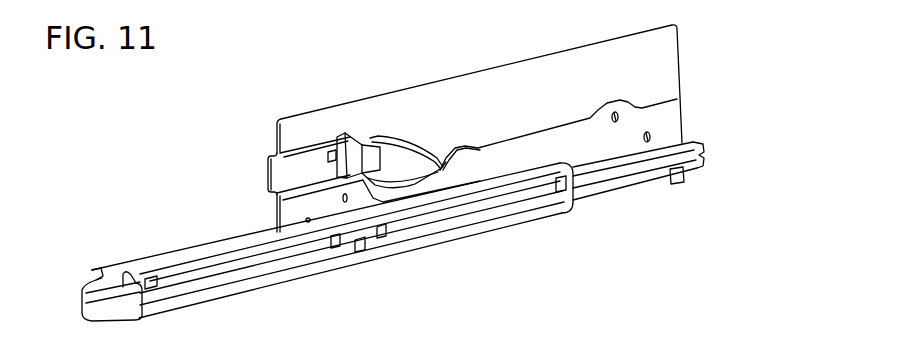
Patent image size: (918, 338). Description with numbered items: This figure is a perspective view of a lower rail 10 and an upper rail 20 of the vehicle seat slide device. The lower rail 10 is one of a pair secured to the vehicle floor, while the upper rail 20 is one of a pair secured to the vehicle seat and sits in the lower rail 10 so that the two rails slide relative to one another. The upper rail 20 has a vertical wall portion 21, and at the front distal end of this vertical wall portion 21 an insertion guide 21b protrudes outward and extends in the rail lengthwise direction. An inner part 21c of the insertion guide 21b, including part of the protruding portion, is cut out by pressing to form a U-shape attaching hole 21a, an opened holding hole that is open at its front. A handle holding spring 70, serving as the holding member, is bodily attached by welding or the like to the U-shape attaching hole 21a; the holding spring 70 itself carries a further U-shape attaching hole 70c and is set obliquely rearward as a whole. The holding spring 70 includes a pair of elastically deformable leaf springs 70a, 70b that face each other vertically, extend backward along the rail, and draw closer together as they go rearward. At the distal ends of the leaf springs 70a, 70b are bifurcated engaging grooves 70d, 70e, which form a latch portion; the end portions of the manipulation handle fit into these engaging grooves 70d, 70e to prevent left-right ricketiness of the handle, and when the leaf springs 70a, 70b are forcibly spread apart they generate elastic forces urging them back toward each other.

The lower rail 10 is at (276, 281).
The upper rail 20 is at (627, 178).
The vertical wall portion 21 is at (580, 63).
The U-shape attaching hole 21a is at (332, 157).
The insertion guide 21b is at (287, 173).
The inner part of the insertion guide 21c is at (358, 128).
The handle holding spring 70 is at (403, 102).
The leaf spring 70a is at (424, 146).
The leaf spring 70b is at (385, 183).
The U-shape attaching hole 70c is at (343, 138).
The engaging groove 70d is at (447, 166).
The engaging groove 70e is at (450, 172).